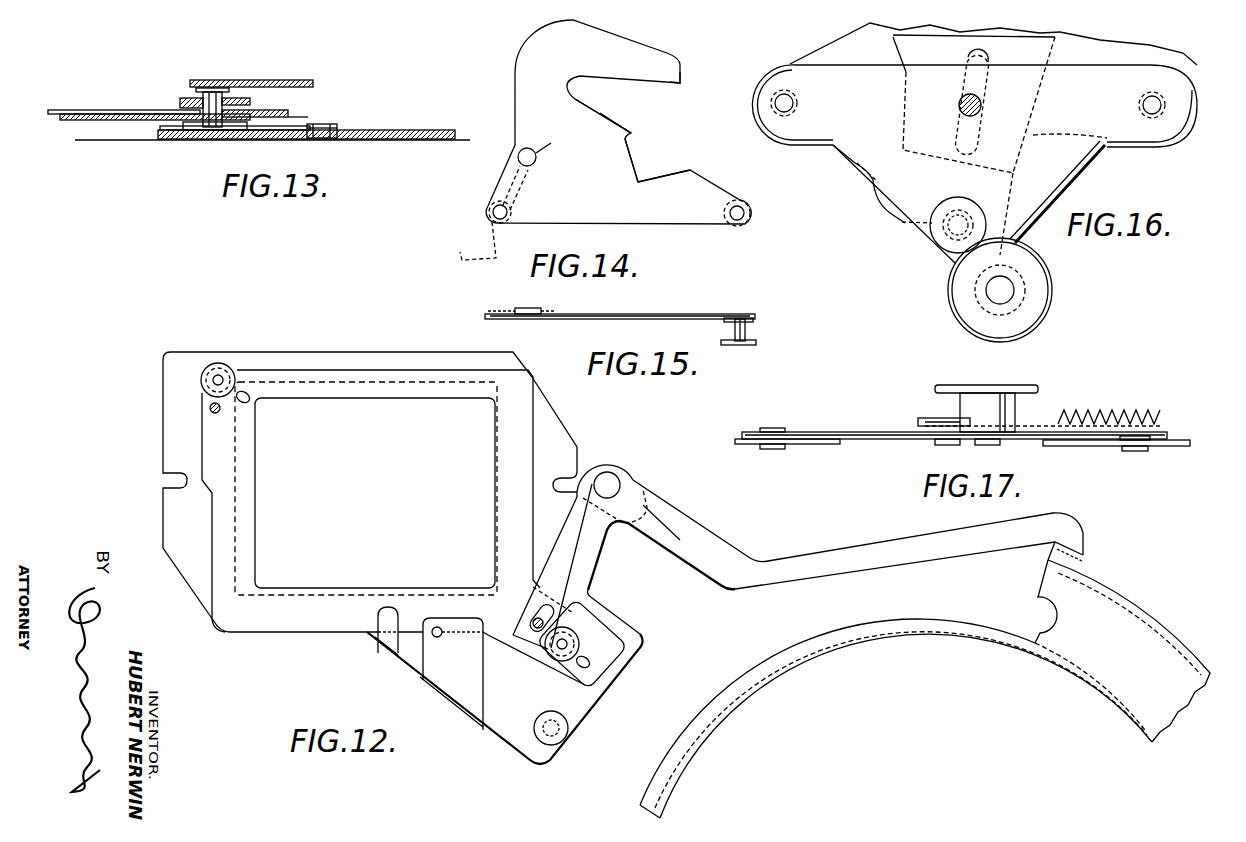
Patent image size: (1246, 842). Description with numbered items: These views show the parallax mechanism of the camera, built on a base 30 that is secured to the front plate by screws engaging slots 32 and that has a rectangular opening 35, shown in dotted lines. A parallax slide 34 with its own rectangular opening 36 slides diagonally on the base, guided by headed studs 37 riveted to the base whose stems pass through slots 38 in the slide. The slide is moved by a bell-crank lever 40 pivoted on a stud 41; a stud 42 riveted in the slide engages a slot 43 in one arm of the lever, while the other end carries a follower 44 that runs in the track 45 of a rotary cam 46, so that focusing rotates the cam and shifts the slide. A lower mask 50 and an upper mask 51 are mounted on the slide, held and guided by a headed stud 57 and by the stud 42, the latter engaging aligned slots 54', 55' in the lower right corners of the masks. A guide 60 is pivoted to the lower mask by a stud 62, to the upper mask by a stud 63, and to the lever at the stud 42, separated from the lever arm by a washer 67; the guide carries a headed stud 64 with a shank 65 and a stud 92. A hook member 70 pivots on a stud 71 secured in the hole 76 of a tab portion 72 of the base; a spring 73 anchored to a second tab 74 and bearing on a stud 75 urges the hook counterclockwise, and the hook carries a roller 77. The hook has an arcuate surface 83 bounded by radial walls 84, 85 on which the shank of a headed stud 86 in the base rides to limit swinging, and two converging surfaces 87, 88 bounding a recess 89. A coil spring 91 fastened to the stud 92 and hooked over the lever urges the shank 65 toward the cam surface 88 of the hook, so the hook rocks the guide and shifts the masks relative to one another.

In FIG. 13, the base 30 is at (440, 132).
In FIG. 12, the base 30 is at (550, 437).
In FIG. 12, the slots 32 is at (163, 478).
In FIG. 13, the parallax slide 34 is at (366, 129).
In FIG. 12, the parallax slide 34 is at (498, 460).
In FIG. 12, the rectangular opening 35 is at (245, 553).
In FIG. 12, the rectangular opening 36 is at (378, 410).
In FIG. 13, the headed studs 37 is at (322, 124).
In FIG. 12, the headed studs 37 is at (201, 378).
In FIG. 12, the slots 38 is at (248, 398).
In FIG. 13, the bell-crank lever 40 is at (250, 102).
In FIG. 12, the bell-crank lever 40 is at (820, 562).
In FIG. 12, the stud 41 is at (610, 484).
In FIG. 13, the stud 42 is at (200, 96).
In FIG. 16, the stud 42 is at (981, 100).
In FIG. 12, the stud 42 is at (538, 630).
In FIG. 13, the slot 43 is at (210, 90).
In FIG. 12, the slot 43 is at (534, 603).
In FIG. 12, the follower 44 is at (1076, 552).
In FIG. 12, the track 45 is at (1180, 652).
In FIG. 12, the rotary cam 46 is at (898, 637).
In FIG. 13, the lower mask 50 is at (122, 119).
In FIG. 16, the lower mask 50 is at (848, 50).
In FIG. 17, the lower mask 50 is at (808, 446).
In FIG. 13, the upper mask 51 is at (130, 111).
In FIG. 16, the upper mask 51 is at (1122, 56).
In FIG. 17, the upper mask 51 is at (1075, 447).
In FIG. 16, the slot 54' is at (956, 72).
In FIG. 16, the slot 55' is at (988, 105).
In FIG. 12, the headed stud 57 is at (211, 412).
In FIG. 13, the guide 60 is at (290, 116).
In FIG. 16, the guide 60 is at (1068, 168).
In FIG. 17, the guide 60 is at (878, 432).
In FIG. 16, the stud 62 is at (791, 102).
In FIG. 17, the stud 62 is at (772, 450).
In FIG. 16, the stud 63 is at (1144, 100).
In FIG. 17, the stud 63 is at (1140, 452).
In FIG. 16, the headed stud 64 is at (1047, 285).
In FIG. 17, the headed stud 64 is at (1025, 387).
In FIG. 16, the shank 65 is at (1006, 282).
In FIG. 17, the shank 65 is at (1012, 412).
In FIG. 13, the washer 67 is at (195, 105).
In FIG. 13, the hook member 70 is at (277, 80).
In FIG. 14, the hook member 70 is at (688, 218).
In FIG. 15, the hook member 70 is at (566, 316).
In FIG. 14, the stud 71 is at (490, 212).
In FIG. 12, the tab portion 72 is at (475, 702).
In FIG. 14, the spring 73 is at (490, 238).
In FIG. 12, the second tab 74 is at (378, 625).
In FIG. 14, the stud 75 is at (534, 151).
In FIG. 15, the stud 75 is at (527, 307).
In FIG. 12, the hole 76 is at (437, 637).
In FIG. 14, the roller 77 is at (746, 205).
In FIG. 15, the roller 77 is at (752, 338).
In FIG. 14, the arcuate surface 83 is at (637, 163).
In FIG. 14, the radial wall 84 is at (679, 176).
In FIG. 14, the radial wall 85 is at (631, 137).
In FIG. 12, the headed stud 86 is at (560, 738).
In FIG. 14, the converging surface 87 is at (615, 128).
In FIG. 14, the converging surface 88 is at (661, 84).
In FIG. 14, the recess 89 is at (603, 111).
In FIG. 17, the coil spring 91 is at (1100, 410).
In FIG. 16, the stud 92 is at (940, 237).
In FIG. 17, the stud 92 is at (932, 418).